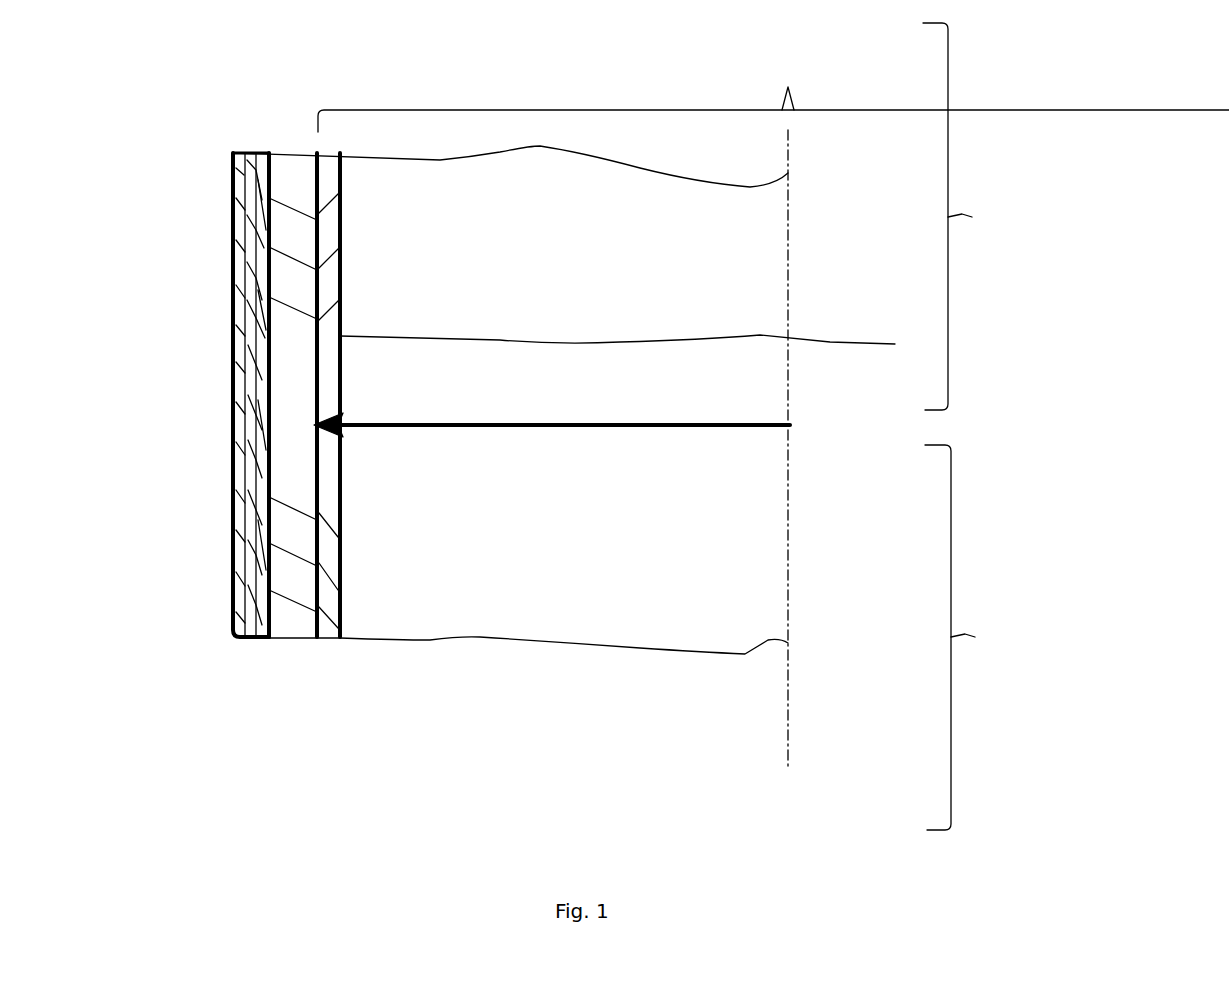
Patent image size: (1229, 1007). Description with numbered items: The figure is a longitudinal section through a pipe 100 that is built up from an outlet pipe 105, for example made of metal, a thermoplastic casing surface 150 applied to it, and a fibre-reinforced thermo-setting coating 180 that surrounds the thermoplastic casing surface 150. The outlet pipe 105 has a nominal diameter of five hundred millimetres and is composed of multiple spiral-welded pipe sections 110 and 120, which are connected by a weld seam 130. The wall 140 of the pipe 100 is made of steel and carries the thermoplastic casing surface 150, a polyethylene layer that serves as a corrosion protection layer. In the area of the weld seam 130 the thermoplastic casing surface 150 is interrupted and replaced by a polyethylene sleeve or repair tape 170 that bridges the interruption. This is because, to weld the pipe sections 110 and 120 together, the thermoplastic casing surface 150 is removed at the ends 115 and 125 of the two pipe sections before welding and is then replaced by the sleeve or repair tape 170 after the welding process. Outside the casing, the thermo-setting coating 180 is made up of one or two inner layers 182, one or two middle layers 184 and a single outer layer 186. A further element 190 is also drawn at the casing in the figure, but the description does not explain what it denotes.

The filtration assembly 100 is at (950, 421).
The axis / centerline 105 is at (773, 407).
The lower region 110 is at (981, 637).
The lower fluid region 115 is at (727, 598).
The upper region 120 is at (980, 216).
The upper fluid region 125 is at (753, 266).
The flow direction arrow 130 is at (318, 442).
The support layer 140 is at (337, 610).
The filter layer 150 is at (283, 258).
The intermediate layer 170 is at (282, 385).
The membrane stack 180 is at (269, 108).
The first membrane layer 182 is at (262, 150).
The second membrane layer 184 is at (245, 170).
The third membrane layer 186 is at (233, 225).
The outer layer 190 is at (232, 582).